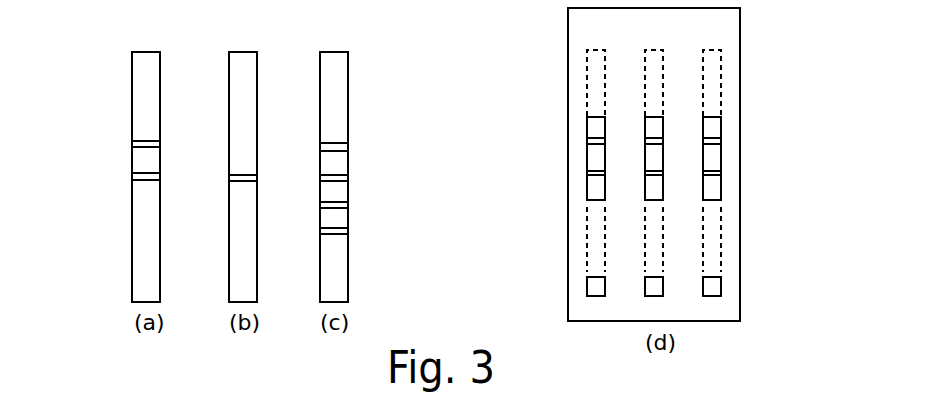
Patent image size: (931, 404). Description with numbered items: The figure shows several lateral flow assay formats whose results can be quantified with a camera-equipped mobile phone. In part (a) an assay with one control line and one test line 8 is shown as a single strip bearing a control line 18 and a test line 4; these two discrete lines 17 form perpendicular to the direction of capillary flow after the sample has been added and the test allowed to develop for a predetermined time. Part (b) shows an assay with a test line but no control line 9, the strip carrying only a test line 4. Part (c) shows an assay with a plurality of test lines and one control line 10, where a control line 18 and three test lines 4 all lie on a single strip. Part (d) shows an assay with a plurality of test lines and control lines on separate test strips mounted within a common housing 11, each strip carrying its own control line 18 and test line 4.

The test line 4 is at (129, 172).
The assay with one control line and one test line 8 is at (115, 80).
The assay with a test line but no control line 9 is at (225, 80).
The assay with a plurality of test lines and one control line on a single test strip 10 is at (311, 80).
The assay with a plurality of test lines and control lines on separate test strips m 11 is at (553, 78).
The discrete lines 17 is at (36, 120).
The control line 18 is at (129, 143).